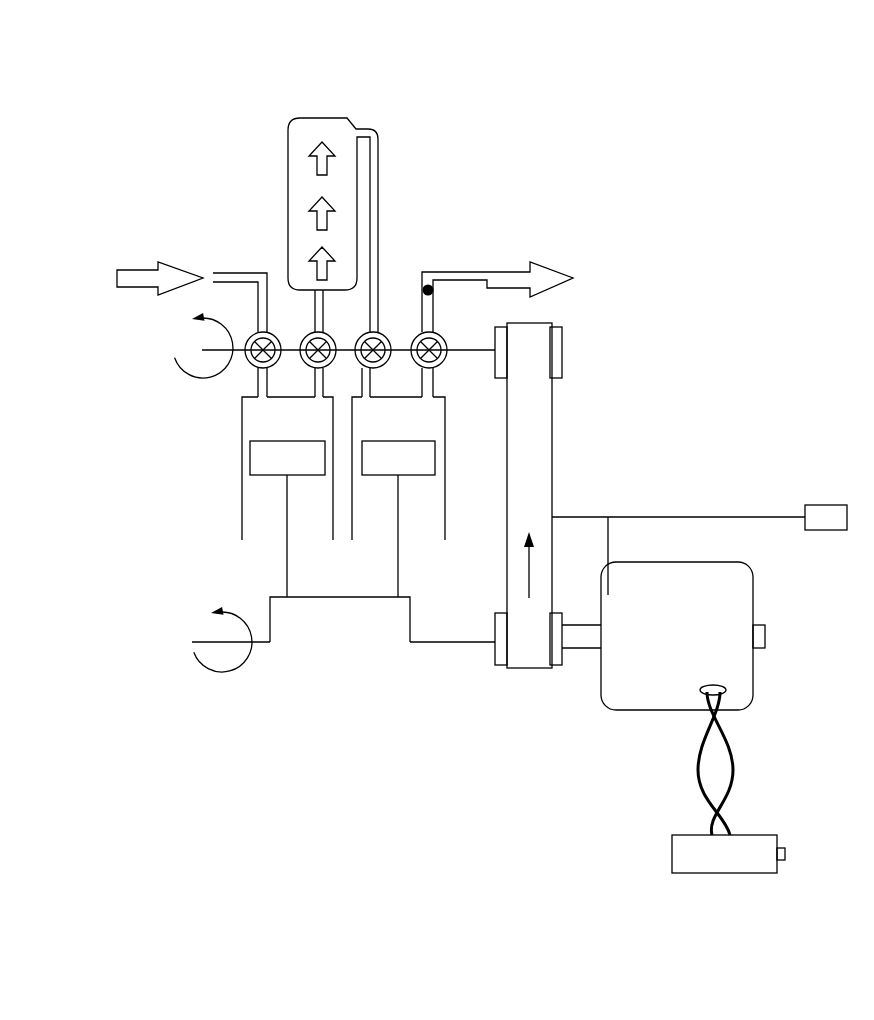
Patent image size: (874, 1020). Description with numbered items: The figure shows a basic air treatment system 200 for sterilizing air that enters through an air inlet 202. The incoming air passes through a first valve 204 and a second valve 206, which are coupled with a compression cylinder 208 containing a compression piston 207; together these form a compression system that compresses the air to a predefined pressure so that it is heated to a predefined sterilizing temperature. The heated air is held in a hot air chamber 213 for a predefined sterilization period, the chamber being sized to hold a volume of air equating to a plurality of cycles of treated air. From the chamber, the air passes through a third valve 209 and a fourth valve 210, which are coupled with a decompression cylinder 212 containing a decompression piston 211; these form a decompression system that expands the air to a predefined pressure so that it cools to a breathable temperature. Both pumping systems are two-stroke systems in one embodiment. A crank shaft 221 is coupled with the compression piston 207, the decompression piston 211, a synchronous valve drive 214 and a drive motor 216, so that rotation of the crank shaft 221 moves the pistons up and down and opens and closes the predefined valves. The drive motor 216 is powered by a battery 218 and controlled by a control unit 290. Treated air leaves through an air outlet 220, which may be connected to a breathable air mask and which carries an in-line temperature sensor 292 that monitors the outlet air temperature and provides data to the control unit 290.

The air treatment system 200 is at (113, 43).
The air inlet 202 is at (226, 272).
The valve V1 204 is at (250, 362).
The valve V2 206 is at (308, 336).
The compression piston 207 is at (258, 460).
The compression cylinder C1 208 is at (242, 487).
The valve V3 209 is at (363, 380).
The valve V4 210 is at (448, 345).
The decompression piston 211 is at (393, 372).
The decompression cylinder C2 212 is at (445, 493).
The hot air chamber 213 is at (288, 162).
The synchronous valve drive 214 is at (522, 402).
The drive motor 216 is at (753, 603).
The battery 218 is at (705, 876).
The air outlet 220 is at (446, 277).
The crank shaft 221 is at (205, 640).
The control unit 290 is at (825, 505).
The temperature sensor 292 is at (424, 287).